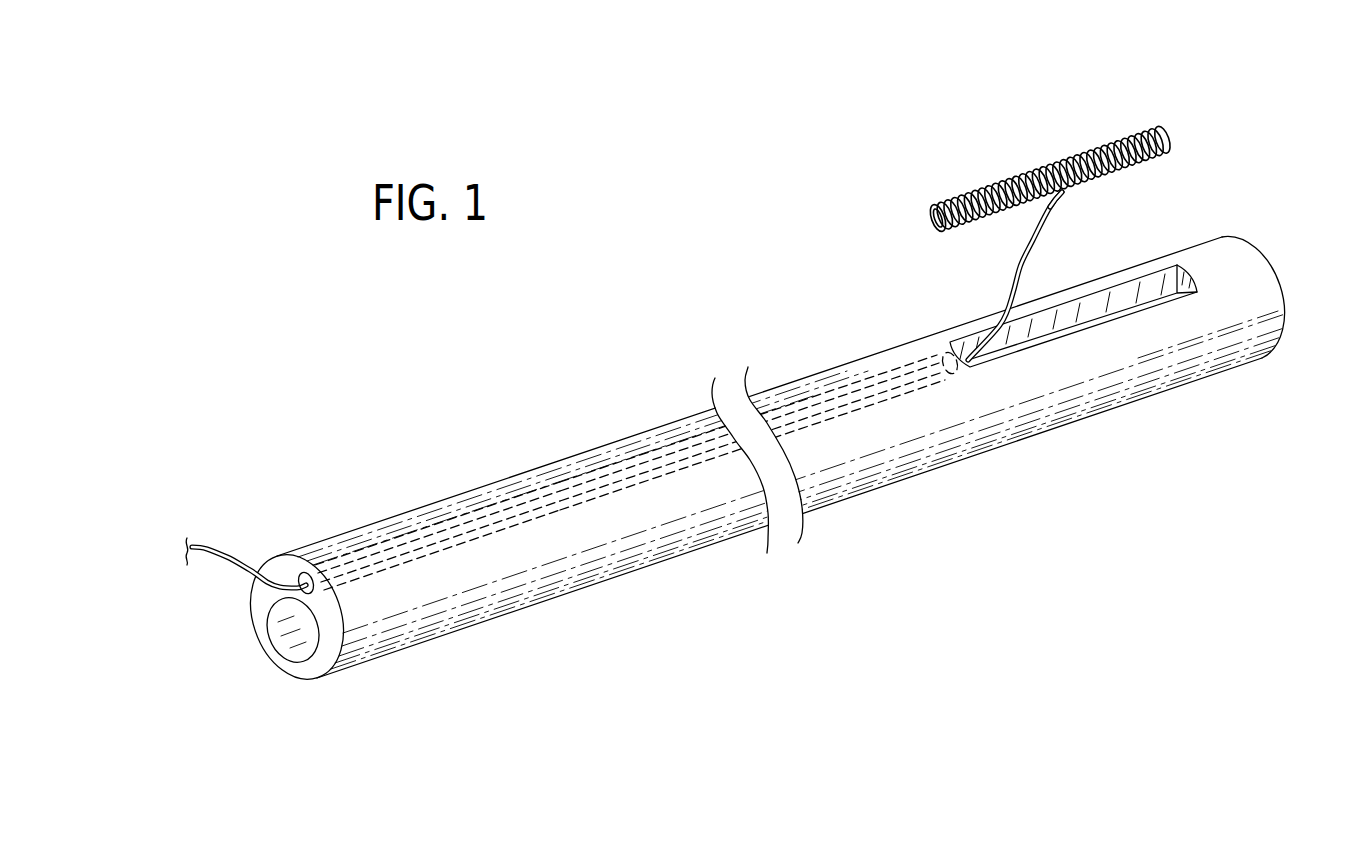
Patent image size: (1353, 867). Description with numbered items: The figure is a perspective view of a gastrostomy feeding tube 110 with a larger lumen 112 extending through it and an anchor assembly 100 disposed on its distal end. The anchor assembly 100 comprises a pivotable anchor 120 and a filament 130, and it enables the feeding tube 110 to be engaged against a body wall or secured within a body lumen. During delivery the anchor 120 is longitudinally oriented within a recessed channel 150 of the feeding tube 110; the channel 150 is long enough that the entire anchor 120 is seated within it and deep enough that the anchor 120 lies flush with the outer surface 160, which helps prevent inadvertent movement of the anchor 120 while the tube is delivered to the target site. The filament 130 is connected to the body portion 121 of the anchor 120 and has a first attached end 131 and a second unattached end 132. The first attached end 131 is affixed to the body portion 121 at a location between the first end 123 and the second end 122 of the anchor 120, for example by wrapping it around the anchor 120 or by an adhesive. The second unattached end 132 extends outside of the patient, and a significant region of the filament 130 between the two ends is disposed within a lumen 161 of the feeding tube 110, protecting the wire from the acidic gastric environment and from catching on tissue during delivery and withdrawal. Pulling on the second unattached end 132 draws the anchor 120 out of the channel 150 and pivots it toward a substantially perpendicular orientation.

The anchor assembly 100 is at (923, 106).
The gastrostomy feeding tube 110 is at (580, 588).
The lumen 112 is at (317, 644).
The pivotable anchor 120 is at (1042, 160).
The body portion 121 is at (1043, 168).
The second end 122 is at (1167, 138).
The first end 123 is at (930, 213).
The filament 130 is at (1007, 278).
The first attached end 131 is at (1063, 193).
The second unattached end 132 is at (190, 550).
The recessed channel 150 is at (1037, 327).
The outer surface 160 is at (637, 441).
The lumen 161 is at (340, 563).